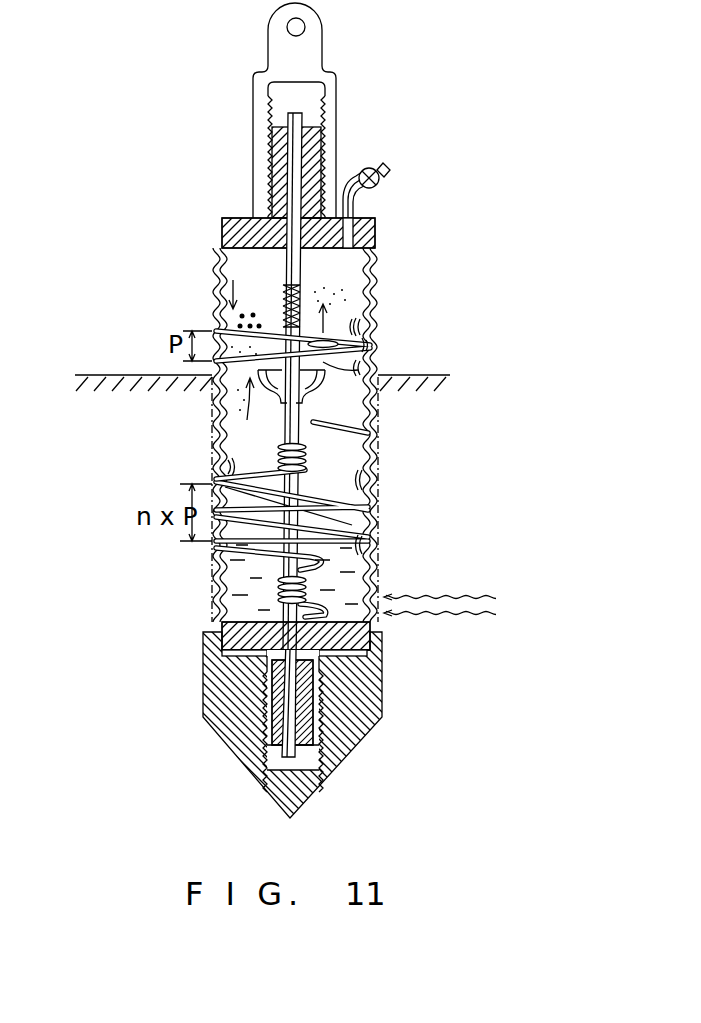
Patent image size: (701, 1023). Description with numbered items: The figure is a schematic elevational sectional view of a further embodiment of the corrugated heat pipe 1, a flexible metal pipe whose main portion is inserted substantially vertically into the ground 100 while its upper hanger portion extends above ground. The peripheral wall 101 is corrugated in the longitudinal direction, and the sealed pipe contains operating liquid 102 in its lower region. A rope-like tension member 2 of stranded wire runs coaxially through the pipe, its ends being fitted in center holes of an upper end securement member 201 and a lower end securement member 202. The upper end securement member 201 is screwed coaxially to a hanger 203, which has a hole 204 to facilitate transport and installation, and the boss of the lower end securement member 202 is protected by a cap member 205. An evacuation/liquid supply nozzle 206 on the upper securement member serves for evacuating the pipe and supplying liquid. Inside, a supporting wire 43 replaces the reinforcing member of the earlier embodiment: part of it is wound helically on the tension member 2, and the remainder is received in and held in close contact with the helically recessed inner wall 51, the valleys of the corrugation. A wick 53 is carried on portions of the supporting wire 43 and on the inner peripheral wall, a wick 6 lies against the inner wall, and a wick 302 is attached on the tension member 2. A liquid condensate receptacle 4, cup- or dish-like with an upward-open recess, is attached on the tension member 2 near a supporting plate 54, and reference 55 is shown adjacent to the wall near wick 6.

The corrugated heat pipe 1 is at (226, 275).
The rope-like tension member 2 is at (286, 115).
The liquid condensate receptacle 4 is at (370, 364).
The wick 6 is at (368, 338).
The supporting wire 43 is at (337, 435).
The helically recessed inner wall 51 is at (217, 479).
The wick 53 is at (376, 488).
The supporting plate 54 is at (330, 340).
The flow curves 55 is at (358, 327).
The ground 100 is at (117, 424).
The peripheral wall 101 is at (228, 293).
The operating liquid 102 is at (214, 583).
The upper end securement member 201 is at (235, 226).
The lower end securement member 202 is at (222, 612).
The hanger 203 is at (261, 82).
The hole 204 is at (287, 27).
The cap member 205 is at (248, 760).
The evacuation/liquid supply nozzle 206 is at (376, 169).
The wick 302 is at (300, 286).